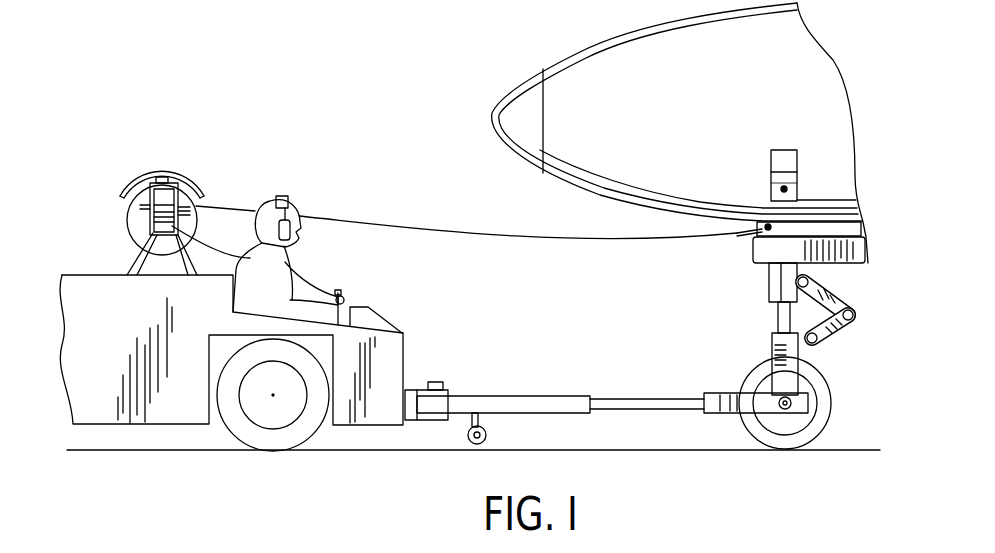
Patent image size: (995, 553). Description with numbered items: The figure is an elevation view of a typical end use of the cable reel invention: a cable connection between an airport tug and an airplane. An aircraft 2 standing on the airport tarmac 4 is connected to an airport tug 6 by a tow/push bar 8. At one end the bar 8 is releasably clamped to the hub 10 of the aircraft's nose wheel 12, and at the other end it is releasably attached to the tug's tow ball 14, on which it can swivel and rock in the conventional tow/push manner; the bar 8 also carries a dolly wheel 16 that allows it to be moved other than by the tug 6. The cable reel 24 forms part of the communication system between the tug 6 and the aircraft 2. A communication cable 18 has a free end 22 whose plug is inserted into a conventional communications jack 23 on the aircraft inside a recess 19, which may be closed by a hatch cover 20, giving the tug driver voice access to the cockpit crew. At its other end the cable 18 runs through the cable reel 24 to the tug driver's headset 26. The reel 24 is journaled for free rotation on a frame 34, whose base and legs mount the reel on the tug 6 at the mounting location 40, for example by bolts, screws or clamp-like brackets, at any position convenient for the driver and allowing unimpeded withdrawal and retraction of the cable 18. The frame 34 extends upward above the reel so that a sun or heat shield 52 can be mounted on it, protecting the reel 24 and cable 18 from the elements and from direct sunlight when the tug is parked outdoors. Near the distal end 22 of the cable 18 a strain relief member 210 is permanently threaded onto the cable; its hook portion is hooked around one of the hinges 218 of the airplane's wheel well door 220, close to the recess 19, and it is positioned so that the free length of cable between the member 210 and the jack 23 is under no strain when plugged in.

The aircraft 2 is at (614, 60).
The airport tarmac 4 is at (588, 450).
The airport tug 6 is at (105, 275).
The tow/push bar 8 is at (525, 397).
The hub 10 is at (790, 402).
The nose wheel 12 is at (818, 420).
The tow ball 14 is at (442, 383).
The dolly wheel 16 is at (488, 436).
The communication cable 18 is at (570, 242).
The recess 19 is at (793, 182).
The hatch cover 20 is at (790, 155).
The free end 22 is at (783, 190).
The communications jack 23 is at (797, 185).
The cable reel 24 is at (128, 222).
The headset 26 is at (300, 240).
The frame 34 is at (147, 210).
The mounting 40 is at (160, 270).
The sun or heat shield 52 is at (182, 178).
The strain relief member 210 is at (760, 230).
The hinge 218 is at (768, 229).
The wheel well door 220 is at (790, 262).